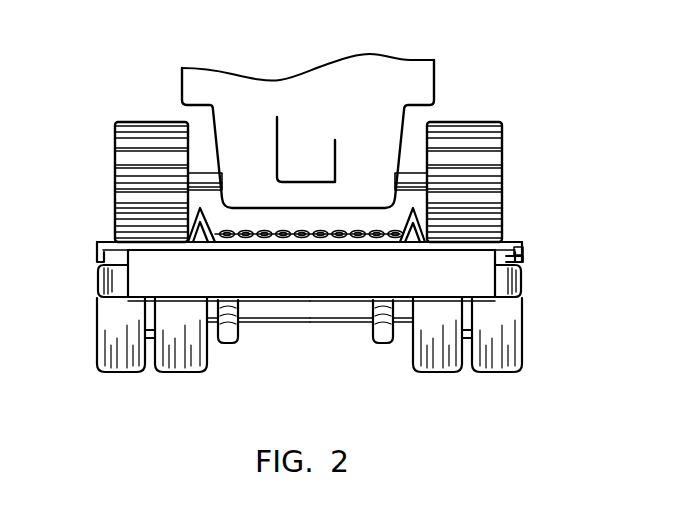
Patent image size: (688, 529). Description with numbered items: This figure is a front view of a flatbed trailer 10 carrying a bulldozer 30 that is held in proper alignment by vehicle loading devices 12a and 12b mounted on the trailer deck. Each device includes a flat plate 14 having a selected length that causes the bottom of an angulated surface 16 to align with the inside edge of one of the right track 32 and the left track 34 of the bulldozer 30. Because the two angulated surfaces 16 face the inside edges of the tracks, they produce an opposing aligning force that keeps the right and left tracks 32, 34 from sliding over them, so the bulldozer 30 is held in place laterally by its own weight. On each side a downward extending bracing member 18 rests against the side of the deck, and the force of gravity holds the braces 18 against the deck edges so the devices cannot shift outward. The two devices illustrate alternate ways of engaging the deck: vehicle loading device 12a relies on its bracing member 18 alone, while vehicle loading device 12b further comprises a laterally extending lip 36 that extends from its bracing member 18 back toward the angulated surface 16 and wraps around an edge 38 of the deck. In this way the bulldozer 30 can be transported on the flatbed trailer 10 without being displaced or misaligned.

The flatbed trailer 10 is at (147, 277).
The vehicle loading device 12a is at (175, 245).
The vehicle loading device 12b is at (437, 243).
The flat plate 14 is at (467, 242).
The angulated surface 16 is at (190, 216).
The bracing member 18 is at (98, 250).
The bulldozer 30 is at (398, 78).
The right track 32 is at (147, 168).
The left track 34 is at (484, 142).
The laterally extending lip 36 is at (524, 254).
The edge 38 is at (516, 260).